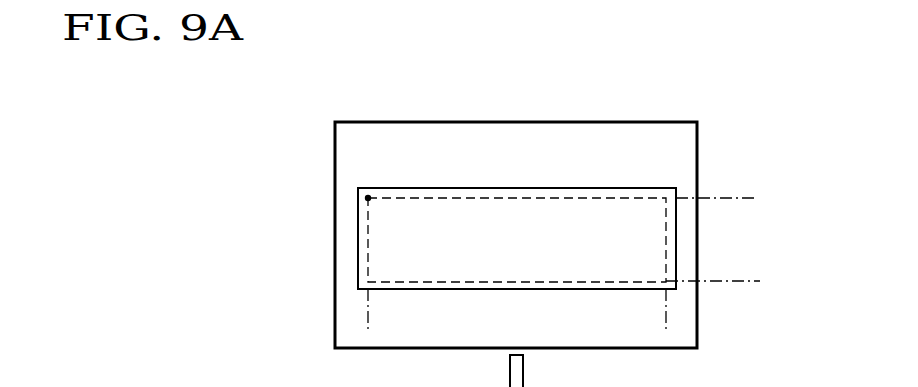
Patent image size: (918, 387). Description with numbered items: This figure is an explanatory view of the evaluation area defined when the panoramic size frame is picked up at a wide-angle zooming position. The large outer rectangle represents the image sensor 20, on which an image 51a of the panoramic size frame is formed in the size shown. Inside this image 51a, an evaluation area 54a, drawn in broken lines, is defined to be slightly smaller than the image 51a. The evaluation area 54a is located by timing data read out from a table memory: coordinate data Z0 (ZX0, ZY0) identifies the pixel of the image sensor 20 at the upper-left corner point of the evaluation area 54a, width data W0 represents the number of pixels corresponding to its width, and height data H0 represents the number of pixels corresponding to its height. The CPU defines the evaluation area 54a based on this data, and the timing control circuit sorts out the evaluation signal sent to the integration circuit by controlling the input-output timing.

The image sensor 20 is at (697, 148).
The image of the panoramic size frame 51a is at (600, 188).
The evaluation area 54a is at (468, 195).
The coordinate data Z0 is at (368, 198).
The height data H0 is at (747, 199).
The width data W0 is at (665, 325).